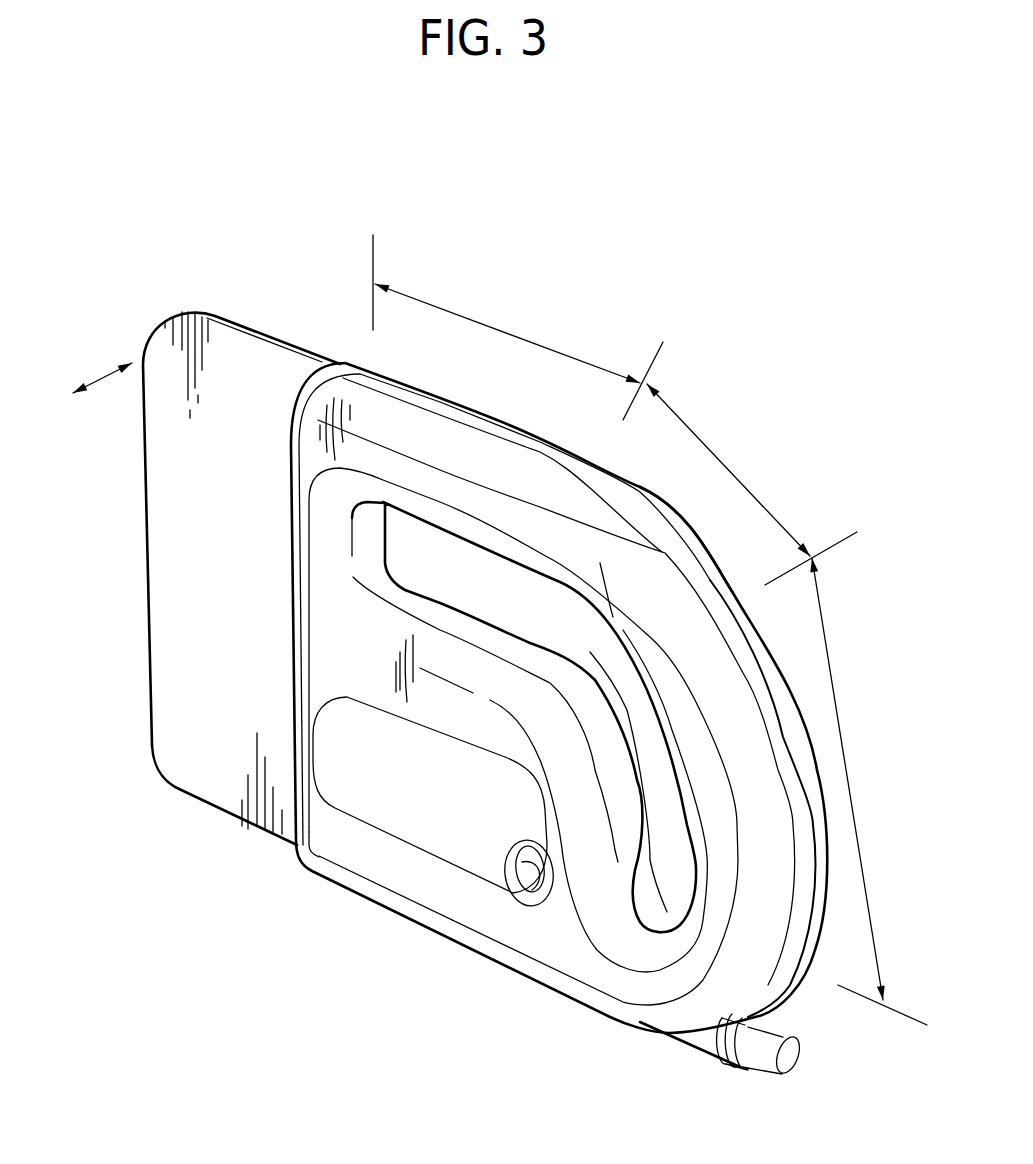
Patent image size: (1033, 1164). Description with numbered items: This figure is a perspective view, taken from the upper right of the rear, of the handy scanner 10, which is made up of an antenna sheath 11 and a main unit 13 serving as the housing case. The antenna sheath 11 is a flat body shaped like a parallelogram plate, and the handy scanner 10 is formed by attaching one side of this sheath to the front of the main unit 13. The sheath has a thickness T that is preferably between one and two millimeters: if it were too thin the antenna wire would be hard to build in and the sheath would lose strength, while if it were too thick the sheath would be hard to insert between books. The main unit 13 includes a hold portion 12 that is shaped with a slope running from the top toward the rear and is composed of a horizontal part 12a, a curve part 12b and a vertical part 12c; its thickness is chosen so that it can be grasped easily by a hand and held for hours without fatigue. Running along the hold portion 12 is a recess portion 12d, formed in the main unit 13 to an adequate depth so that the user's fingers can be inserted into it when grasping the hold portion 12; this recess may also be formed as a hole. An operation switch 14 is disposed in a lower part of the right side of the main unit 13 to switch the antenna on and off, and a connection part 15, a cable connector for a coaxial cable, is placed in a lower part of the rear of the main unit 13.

The handy scanner 10 is at (120, 312).
The antenna sheath 11 is at (173, 493).
The hold portion 12 is at (740, 757).
The horizontal part 12a is at (518, 327).
The curve part 12b is at (752, 484).
The vertical part 12c is at (868, 791).
The recess portion 12d is at (540, 597).
The main unit 13 is at (336, 892).
The operation switch 14 is at (524, 877).
The connection part 15 is at (765, 1050).
The thickness of the antenna sheath T is at (102, 367).